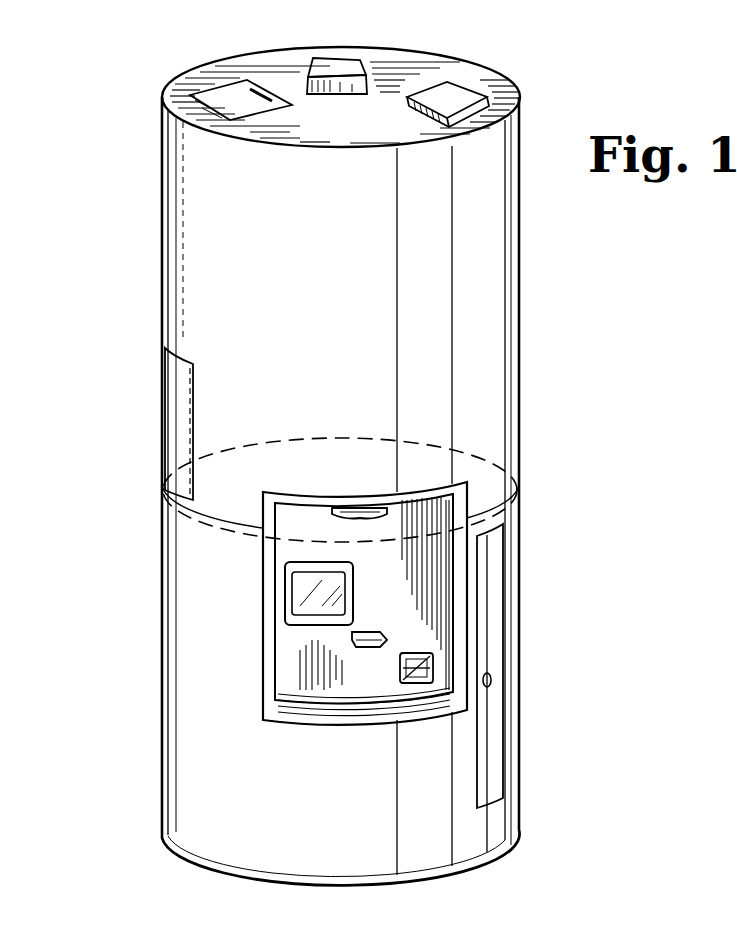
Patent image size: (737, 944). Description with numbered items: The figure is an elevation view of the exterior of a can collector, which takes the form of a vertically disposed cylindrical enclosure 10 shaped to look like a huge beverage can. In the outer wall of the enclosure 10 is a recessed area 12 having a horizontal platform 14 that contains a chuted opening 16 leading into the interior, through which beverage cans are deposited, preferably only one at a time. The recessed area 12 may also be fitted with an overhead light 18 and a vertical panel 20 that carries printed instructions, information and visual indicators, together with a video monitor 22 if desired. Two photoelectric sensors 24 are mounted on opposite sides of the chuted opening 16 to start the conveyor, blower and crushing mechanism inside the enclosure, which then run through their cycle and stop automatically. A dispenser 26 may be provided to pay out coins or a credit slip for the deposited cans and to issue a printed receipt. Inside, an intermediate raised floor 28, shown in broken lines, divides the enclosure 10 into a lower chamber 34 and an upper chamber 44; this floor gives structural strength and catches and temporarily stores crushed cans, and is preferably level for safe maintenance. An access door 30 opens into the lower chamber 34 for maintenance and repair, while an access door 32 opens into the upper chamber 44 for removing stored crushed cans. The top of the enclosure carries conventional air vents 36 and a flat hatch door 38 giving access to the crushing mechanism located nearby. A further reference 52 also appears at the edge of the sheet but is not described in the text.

The cylindrical enclosure 10 is at (528, 286).
The recessed area 12 is at (362, 551).
The horizontal platform 14 is at (400, 710).
The chuted opening 16 is at (437, 662).
The overhead light 18 is at (351, 511).
The vertical panel 20 is at (290, 646).
The video monitor 22 is at (300, 588).
The photoelectric sensors 24 is at (420, 650).
The dispenser 26 is at (372, 648).
The intermediate raised floor 28 is at (508, 425).
The access door 30 is at (503, 731).
The access door 32 is at (178, 405).
The lower chamber 34 is at (176, 688).
The air vents 36 is at (365, 61).
The flat hatch door 38 is at (190, 88).
The upper chamber 44 is at (162, 233).
The reference element 52 is at (724, 458).